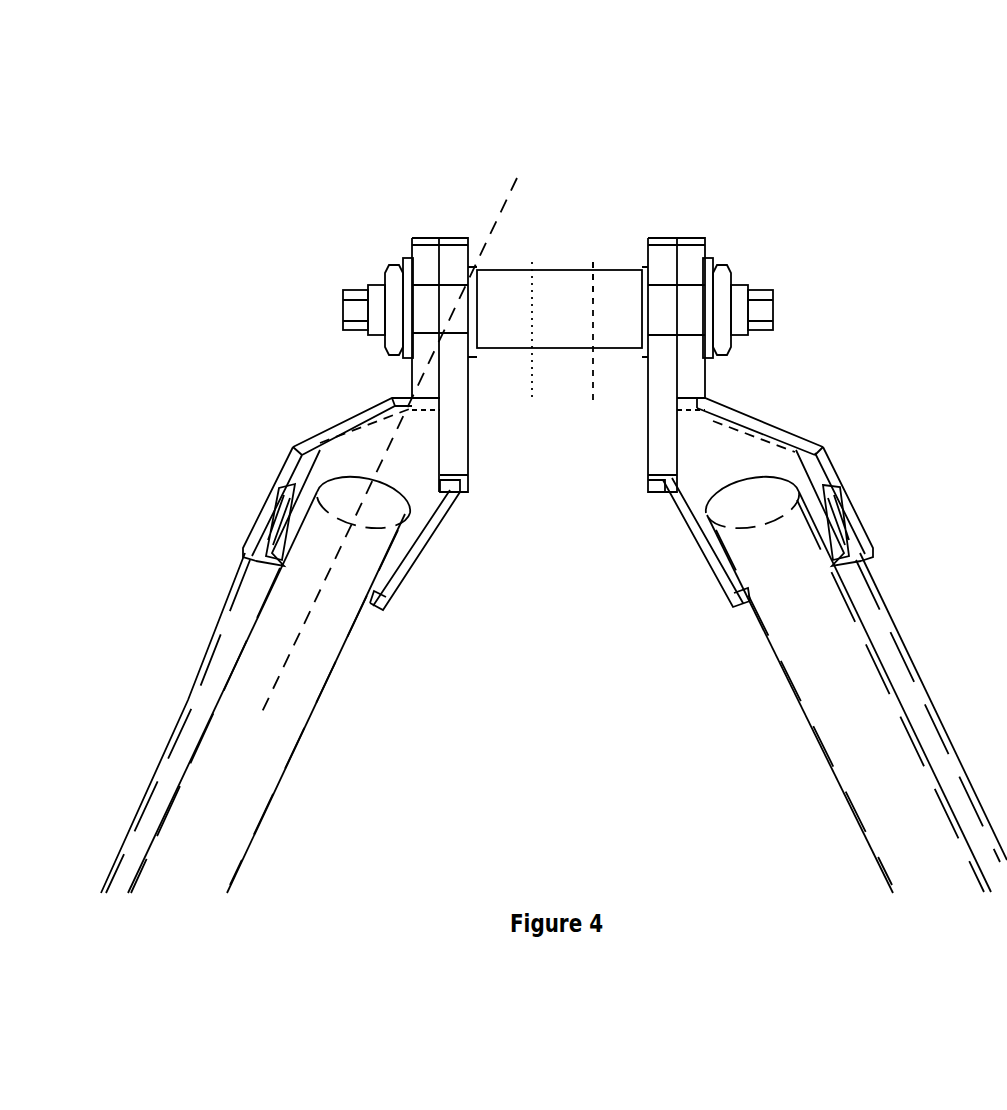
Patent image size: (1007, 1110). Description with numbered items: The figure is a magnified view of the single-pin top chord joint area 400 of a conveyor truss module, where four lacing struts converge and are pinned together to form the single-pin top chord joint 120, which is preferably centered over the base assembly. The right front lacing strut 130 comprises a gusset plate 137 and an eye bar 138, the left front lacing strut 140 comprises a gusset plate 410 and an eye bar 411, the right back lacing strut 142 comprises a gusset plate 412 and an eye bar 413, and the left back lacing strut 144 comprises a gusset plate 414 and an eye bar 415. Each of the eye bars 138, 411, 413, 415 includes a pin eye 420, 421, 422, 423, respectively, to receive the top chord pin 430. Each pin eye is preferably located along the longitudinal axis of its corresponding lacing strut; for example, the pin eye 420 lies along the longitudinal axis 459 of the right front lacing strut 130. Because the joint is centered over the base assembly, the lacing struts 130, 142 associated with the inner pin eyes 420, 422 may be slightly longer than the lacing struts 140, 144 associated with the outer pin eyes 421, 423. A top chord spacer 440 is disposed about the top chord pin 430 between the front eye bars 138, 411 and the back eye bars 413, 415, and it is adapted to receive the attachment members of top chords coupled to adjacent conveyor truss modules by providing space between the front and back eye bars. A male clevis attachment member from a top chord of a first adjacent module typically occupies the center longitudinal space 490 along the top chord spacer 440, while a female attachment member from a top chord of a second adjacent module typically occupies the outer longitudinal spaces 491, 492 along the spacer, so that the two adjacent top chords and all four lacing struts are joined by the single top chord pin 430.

The single-pin top chord joint area 400 is at (376, 103).
The single-pin top chord joint 120 is at (560, 206).
The right front lacing strut 130 is at (308, 741).
The gusset plate 137 is at (422, 540).
The eye bar 138 is at (470, 450).
The left front lacing strut 140 is at (222, 625).
The right back lacing strut 142 is at (825, 768).
The left back lacing strut 144 is at (922, 652).
The gusset plate 410 is at (300, 440).
The eye bar 411 is at (405, 388).
The gusset plate 412 is at (688, 530).
The eye bar 413 is at (648, 447).
The gusset plate 414 is at (823, 447).
The eye bar 415 is at (706, 380).
The pin eye 420 is at (452, 304).
The pin eye 421 is at (426, 292).
The pin eye 422 is at (652, 290).
The pin eye 423 is at (688, 300).
The top chord pin 430 is at (774, 306).
The top chord spacer 440 is at (585, 270).
The longitudinal axis 459 is at (510, 203).
The center longitudinal space 490 is at (560, 358).
The outer longitudinal space 491 is at (498, 358).
The outer longitudinal space 492 is at (615, 358).